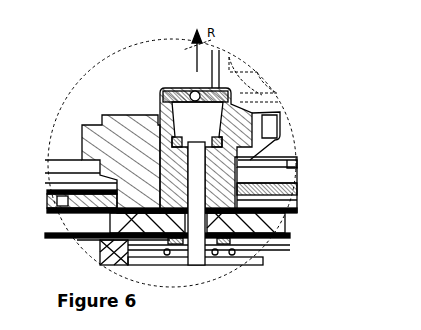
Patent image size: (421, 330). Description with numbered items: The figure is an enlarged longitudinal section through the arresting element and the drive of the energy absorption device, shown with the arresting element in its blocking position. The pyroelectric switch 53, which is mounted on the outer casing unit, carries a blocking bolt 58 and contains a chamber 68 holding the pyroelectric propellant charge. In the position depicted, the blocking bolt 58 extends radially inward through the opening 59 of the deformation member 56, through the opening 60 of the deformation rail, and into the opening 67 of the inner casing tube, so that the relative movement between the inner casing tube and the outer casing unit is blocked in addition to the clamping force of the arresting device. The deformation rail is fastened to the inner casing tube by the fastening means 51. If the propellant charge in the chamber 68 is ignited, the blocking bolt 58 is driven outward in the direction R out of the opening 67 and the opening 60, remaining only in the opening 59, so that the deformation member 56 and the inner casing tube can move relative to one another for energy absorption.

The fastening means 51 is at (100, 255).
The pyroelectric switch 53 is at (127, 140).
The deformation member 56 is at (160, 232).
The blocking bolt 58 is at (200, 176).
The opening 59 is at (255, 226).
The opening 60 is at (209, 265).
The opening 67 is at (194, 266).
The chamber 68 is at (170, 88).